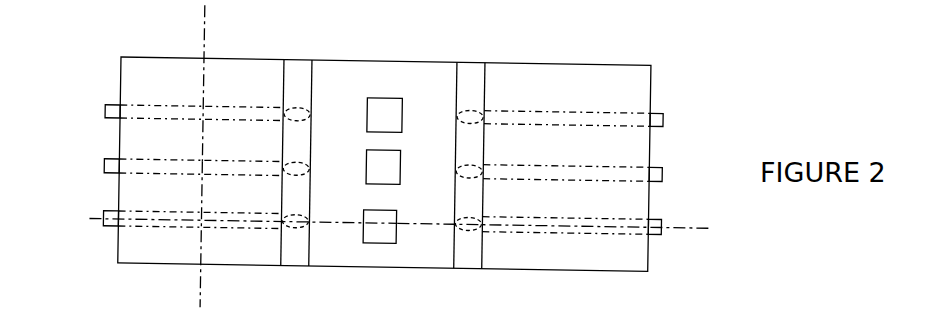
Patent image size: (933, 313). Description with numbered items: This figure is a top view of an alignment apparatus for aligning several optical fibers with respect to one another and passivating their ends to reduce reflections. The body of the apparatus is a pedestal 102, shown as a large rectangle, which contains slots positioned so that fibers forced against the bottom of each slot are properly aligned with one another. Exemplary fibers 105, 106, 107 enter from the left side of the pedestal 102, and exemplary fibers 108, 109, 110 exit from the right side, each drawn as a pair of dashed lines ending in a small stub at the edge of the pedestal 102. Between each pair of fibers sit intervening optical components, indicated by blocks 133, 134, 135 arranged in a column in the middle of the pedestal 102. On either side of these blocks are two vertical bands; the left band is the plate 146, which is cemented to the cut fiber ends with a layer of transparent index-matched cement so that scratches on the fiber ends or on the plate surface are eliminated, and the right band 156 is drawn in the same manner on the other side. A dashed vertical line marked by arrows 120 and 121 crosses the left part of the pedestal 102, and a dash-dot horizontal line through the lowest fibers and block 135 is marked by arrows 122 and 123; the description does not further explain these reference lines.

The pedestal 102 is at (343, 68).
The optical fiber 105 is at (108, 212).
The optical fiber 106 is at (108, 160).
The optical fiber 107 is at (108, 106).
The optical fiber 108 is at (659, 113).
The optical fiber 109 is at (659, 167).
The optical fiber 110 is at (659, 221).
The cut line 120 is at (209, 24).
The cut line 121 is at (207, 300).
The axis line 122 is at (85, 226).
The axis line 123 is at (693, 236).
The block 133 is at (387, 105).
The block 134 is at (386, 162).
The block 135 is at (386, 218).
The plate 146 is at (305, 265).
The reflective band 156 is at (464, 268).